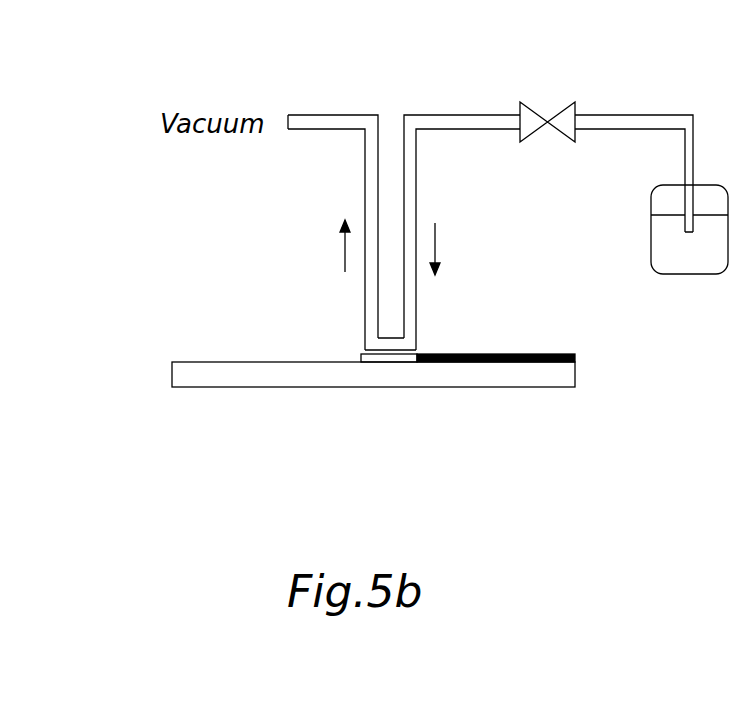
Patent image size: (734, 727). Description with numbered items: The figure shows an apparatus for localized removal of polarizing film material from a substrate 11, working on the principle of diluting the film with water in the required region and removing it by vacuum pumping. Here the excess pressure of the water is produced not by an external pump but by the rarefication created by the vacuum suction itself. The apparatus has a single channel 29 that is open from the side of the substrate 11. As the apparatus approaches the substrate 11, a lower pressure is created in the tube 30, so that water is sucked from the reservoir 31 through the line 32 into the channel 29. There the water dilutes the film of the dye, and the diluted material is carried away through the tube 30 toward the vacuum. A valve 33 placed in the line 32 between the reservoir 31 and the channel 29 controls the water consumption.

The substrate 11 is at (178, 380).
The channel 29 is at (408, 345).
The tube 30 is at (330, 122).
The reservoir 31 is at (693, 260).
The supply line 32 is at (597, 122).
The valve 33 is at (547, 122).